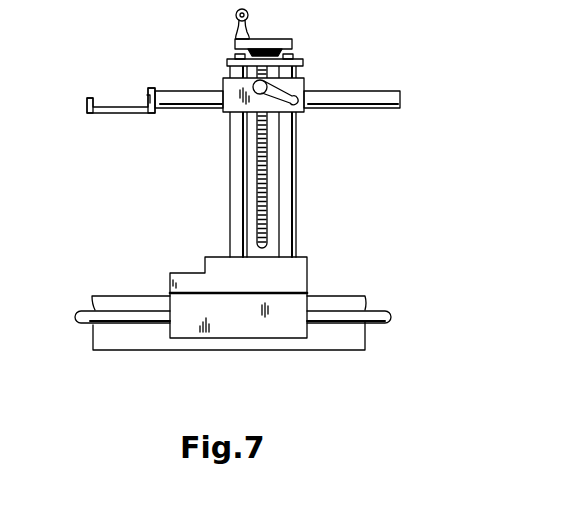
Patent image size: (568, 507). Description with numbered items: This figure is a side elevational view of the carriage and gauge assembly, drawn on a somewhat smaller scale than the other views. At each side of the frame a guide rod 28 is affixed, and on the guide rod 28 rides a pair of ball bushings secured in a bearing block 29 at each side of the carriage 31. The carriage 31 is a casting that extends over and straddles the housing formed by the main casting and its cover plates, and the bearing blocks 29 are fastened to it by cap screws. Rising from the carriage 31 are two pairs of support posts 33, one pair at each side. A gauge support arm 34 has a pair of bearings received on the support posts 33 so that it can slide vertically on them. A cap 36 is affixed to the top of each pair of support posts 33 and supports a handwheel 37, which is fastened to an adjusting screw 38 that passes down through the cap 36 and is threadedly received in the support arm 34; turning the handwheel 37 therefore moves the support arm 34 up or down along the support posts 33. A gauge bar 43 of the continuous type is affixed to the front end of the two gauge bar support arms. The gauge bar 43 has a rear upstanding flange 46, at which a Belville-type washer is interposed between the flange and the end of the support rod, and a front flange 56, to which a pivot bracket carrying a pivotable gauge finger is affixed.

The guide rod 28 is at (128, 313).
The bearing block 29 is at (255, 327).
The carriage 31 is at (293, 273).
The support posts 33 is at (240, 218).
The gauge support arm 34 is at (234, 97).
The cap 36 is at (303, 62).
The handwheel 37 is at (283, 43).
The adjusting screw 38 is at (267, 150).
The gauge bar 43 is at (117, 115).
The rear upstanding flange 46 is at (155, 88).
The front flange 56 is at (85, 106).